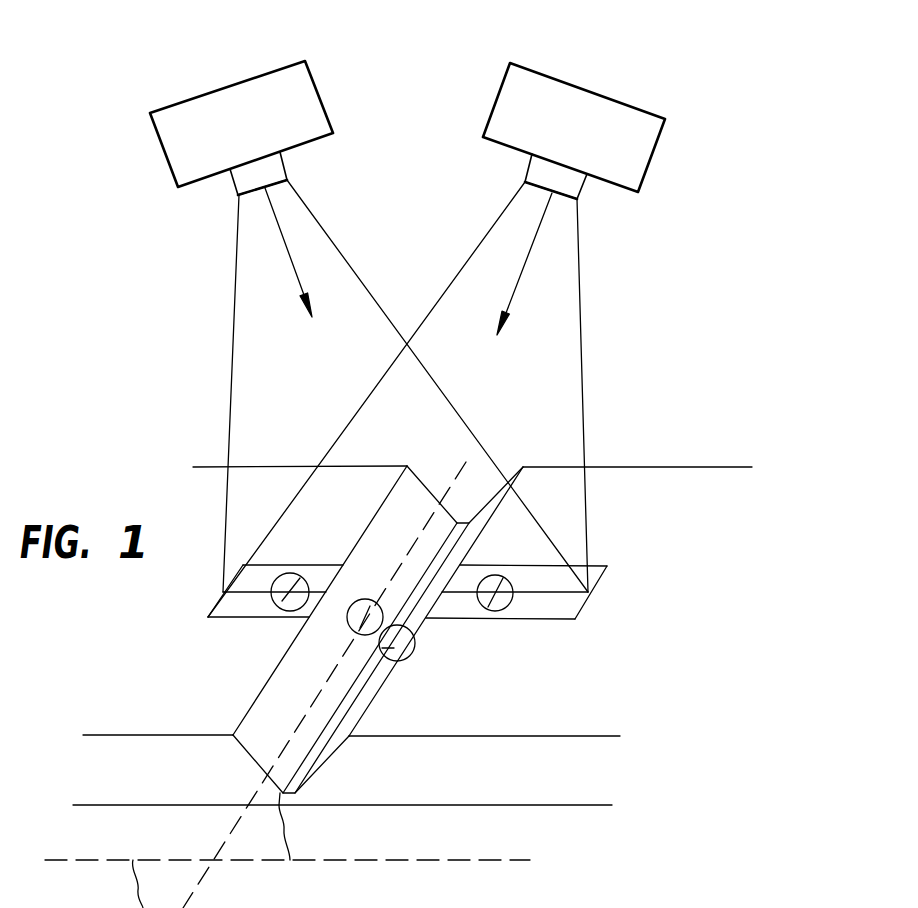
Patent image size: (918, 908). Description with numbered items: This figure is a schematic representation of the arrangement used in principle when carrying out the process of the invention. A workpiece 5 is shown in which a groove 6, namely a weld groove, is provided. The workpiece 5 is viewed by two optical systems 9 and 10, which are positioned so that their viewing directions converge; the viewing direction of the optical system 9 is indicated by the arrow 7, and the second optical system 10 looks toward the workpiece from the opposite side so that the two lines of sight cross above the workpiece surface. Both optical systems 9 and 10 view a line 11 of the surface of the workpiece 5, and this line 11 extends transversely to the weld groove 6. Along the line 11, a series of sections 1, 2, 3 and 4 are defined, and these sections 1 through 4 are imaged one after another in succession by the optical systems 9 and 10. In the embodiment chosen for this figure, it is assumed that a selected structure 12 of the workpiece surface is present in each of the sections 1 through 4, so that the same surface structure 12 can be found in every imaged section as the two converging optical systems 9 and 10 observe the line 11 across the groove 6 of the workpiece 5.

The section 1 is at (284, 612).
The section 2 is at (523, 268).
The section 3 is at (398, 660).
The section 4 is at (495, 611).
The workpiece 5 is at (673, 490).
The groove 6 is at (500, 470).
The arrow 7 is at (283, 242).
The optical system 9 is at (250, 90).
The optical system 10 is at (648, 137).
The line 11 is at (575, 619).
The selected structure 12 is at (288, 572).